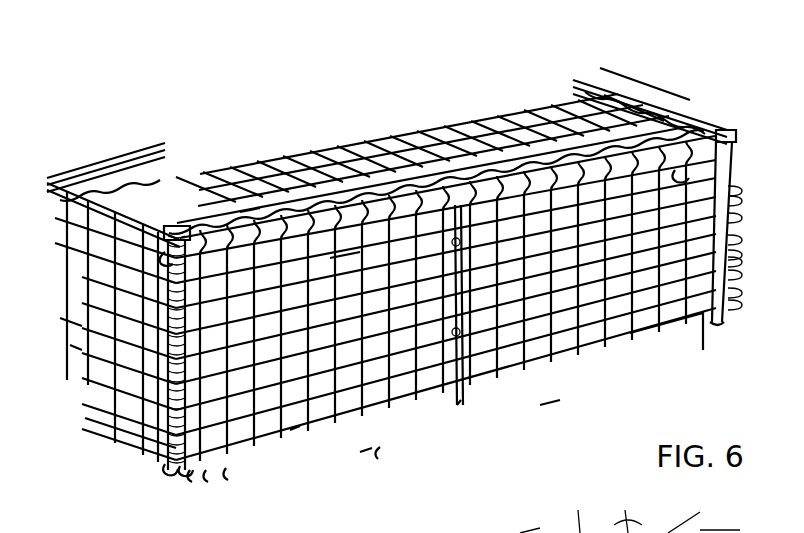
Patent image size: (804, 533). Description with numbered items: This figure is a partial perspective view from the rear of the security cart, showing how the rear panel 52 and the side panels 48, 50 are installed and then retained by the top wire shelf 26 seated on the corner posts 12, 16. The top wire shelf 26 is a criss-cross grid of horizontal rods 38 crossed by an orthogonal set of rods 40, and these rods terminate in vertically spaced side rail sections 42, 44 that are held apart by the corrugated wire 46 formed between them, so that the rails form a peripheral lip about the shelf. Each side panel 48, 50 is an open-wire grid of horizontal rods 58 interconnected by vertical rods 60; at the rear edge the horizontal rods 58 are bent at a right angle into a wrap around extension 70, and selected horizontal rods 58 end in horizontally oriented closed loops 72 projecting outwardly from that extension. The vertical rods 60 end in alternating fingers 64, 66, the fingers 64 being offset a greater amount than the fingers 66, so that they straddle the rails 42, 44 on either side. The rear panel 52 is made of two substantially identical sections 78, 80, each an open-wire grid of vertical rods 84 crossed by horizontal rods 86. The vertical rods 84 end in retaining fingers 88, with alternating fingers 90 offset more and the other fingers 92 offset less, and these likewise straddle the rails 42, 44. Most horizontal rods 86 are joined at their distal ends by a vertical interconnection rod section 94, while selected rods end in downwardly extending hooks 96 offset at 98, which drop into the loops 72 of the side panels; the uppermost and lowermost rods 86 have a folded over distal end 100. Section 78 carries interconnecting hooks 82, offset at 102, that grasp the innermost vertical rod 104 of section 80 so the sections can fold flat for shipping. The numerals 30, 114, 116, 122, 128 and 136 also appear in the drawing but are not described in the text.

The corner post 12 is at (736, 162).
The corner post 16 is at (168, 300).
The top wire shelf 26 is at (370, 66).
The corner post cap 30 is at (182, 228).
The horizontal rods 38 is at (172, 240).
The orthogonal set of rods 40 is at (316, 148).
The side rail section 42 is at (50, 178).
The side rail section 44 is at (65, 186).
The corrugated wire 46 is at (90, 192).
The side panel 48 is at (643, 89).
The side panel 50 is at (96, 430).
The rear panel 52 is at (488, 424).
The horizontal rods 58 is at (84, 356).
The vertical rods 60 is at (74, 332).
The alternating fingers 64 is at (112, 208).
The alternating fingers 66 is at (160, 238).
The wrap around extension 70 is at (196, 458).
The closed loops 72 is at (191, 478).
The back panel section 78 is at (542, 410).
The back panel section 80 is at (368, 452).
The interconnecting hooks 82 is at (450, 246).
The vertical rods 84 is at (452, 332).
The horizontal rods 86 is at (332, 420).
The retaining fingers 88 is at (247, 214).
The alternating fingers 90 is at (206, 247).
The fingers 92 is at (268, 198).
The vertical interconnection rod section 94 is at (258, 472).
The downwardly extending hooks 96 is at (212, 474).
The offset 98 is at (232, 478).
The folded over distal end 100 is at (330, 262).
The offset 102 is at (462, 408).
The vertical rod 104 is at (400, 442).
The element 114 is at (622, 510).
The element 116 is at (574, 510).
The element 122 is at (700, 512).
The element 128 is at (724, 527).
The element 136 is at (512, 523).